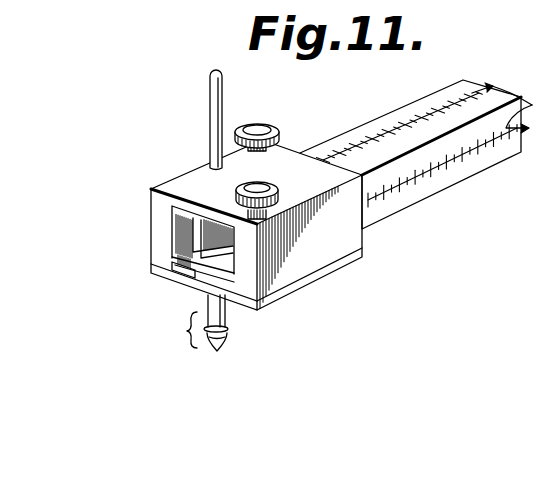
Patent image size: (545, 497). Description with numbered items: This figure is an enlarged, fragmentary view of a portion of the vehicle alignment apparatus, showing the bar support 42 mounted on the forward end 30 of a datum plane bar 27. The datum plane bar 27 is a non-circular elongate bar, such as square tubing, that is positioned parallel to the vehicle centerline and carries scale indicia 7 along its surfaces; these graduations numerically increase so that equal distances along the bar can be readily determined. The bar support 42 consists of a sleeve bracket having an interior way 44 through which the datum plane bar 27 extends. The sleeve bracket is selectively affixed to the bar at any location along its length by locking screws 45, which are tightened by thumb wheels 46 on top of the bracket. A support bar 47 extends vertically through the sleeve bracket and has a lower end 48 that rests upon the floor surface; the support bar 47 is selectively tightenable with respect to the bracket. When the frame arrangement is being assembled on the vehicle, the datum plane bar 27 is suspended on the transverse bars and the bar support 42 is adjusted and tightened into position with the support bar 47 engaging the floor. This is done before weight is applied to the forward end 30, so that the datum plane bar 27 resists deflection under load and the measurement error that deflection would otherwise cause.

The scale indicia 7 is at (532, 105).
The datum plane bar 27 is at (410, 164).
The forward end 30 is at (379, 222).
The bar support 42 is at (185, 181).
The interior way 44 is at (186, 281).
The locking screw 45 is at (271, 136).
The thumb wheel 46 is at (256, 123).
The support bar 47 is at (209, 82).
The lower end 48 is at (225, 338).